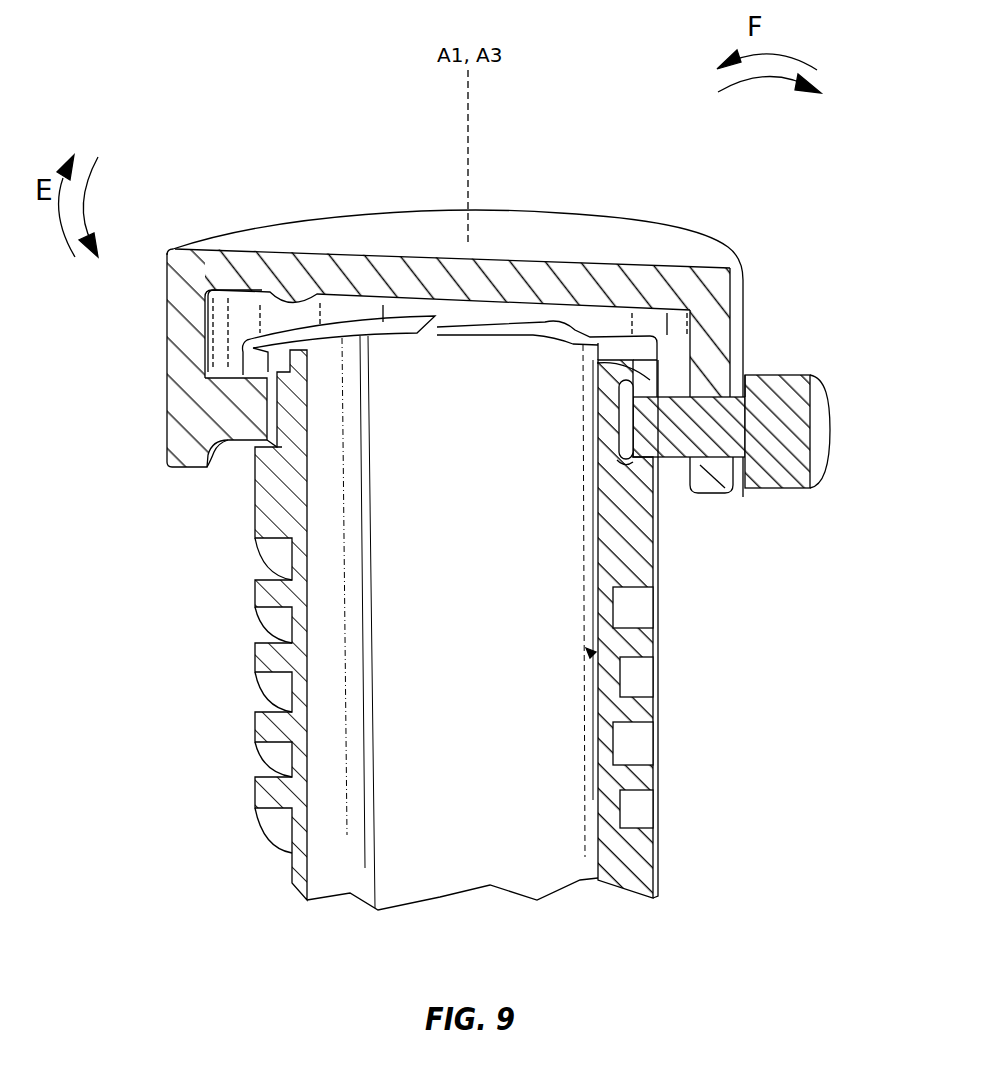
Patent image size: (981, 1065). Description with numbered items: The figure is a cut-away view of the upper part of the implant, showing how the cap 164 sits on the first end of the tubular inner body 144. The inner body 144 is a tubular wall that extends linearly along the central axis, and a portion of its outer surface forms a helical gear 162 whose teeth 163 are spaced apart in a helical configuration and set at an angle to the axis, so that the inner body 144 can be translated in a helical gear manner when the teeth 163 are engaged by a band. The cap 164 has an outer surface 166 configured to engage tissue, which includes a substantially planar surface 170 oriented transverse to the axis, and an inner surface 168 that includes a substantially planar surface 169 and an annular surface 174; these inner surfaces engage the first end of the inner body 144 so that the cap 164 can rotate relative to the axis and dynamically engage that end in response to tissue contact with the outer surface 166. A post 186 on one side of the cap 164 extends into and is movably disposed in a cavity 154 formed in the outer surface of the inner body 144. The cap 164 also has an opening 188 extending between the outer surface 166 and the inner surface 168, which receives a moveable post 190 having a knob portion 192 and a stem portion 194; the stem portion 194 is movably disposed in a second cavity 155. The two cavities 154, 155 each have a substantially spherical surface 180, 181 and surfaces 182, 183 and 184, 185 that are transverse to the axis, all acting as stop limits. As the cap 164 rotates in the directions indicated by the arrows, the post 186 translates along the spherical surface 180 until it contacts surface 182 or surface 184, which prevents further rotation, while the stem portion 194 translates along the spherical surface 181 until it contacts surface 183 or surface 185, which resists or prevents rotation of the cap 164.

The inner body 144 is at (600, 660).
The cavity 154 is at (277, 455).
The cavity 155 is at (612, 470).
The helical gear 162 is at (648, 795).
The teeth 163 is at (640, 752).
The cap 164 is at (735, 310).
The outer surface 166 is at (573, 217).
The inner surface 168 is at (237, 320).
The planar surface 169 is at (260, 280).
The planar surface 170 is at (390, 227).
The annular surface 174 is at (172, 372).
The spherical surface 180 is at (306, 407).
The spherical surface 181 is at (620, 445).
The transverse surface 182 is at (277, 458).
The transverse surface 183 is at (592, 545).
The transverse surface 184 is at (293, 352).
The transverse surface 185 is at (597, 372).
The post 186 is at (263, 433).
The opening 188 is at (746, 374).
The moveable post 190 is at (827, 425).
The knob portion 192 is at (793, 484).
The stem portion 194 is at (670, 449).